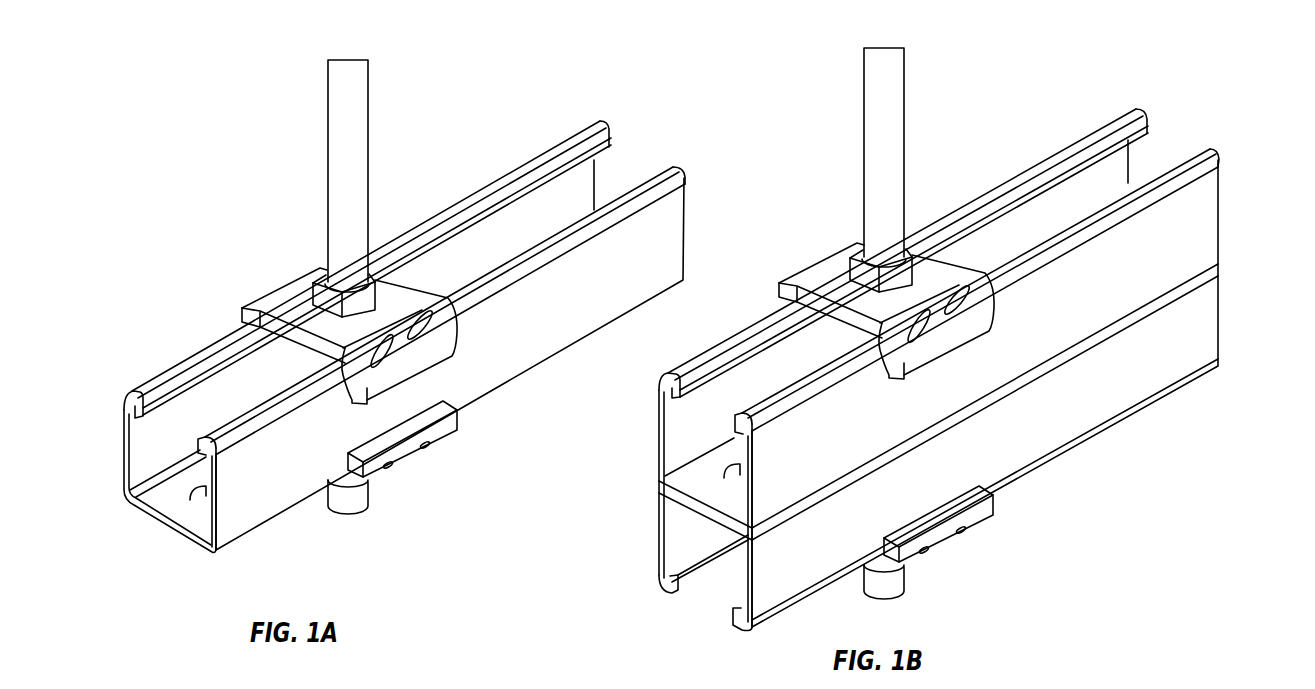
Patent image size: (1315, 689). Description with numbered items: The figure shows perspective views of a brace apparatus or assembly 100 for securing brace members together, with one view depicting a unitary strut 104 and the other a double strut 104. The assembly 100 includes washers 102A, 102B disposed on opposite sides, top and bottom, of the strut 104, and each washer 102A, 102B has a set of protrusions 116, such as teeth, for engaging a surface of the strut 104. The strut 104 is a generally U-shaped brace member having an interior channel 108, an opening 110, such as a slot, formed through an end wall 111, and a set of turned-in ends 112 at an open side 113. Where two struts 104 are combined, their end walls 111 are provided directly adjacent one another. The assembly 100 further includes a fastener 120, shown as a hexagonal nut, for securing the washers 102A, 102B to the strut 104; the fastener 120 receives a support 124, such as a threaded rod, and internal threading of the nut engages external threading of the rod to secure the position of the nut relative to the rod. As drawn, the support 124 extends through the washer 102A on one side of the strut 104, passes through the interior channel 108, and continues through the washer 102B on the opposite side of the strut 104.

In FIG. 1A, the brace apparatus or assembly 100 is at (128, 130).
In FIG. 1A, the washer 102A is at (305, 298).
In FIG. 1B, the washer 102A is at (838, 270).
In FIG. 1A, the washer 102B is at (407, 455).
In FIG. 1B, the washer 102B is at (940, 540).
In FIG. 1A, the strut 104 is at (665, 233).
In FIG. 1B, the strut 104 is at (1207, 221).
In FIG. 1A, the interior channel 108 is at (158, 458).
In FIG. 1B, the interior channel 108 is at (677, 433).
In FIG. 1A, the opening 110 is at (200, 500).
In FIG. 1B, the opening 110 is at (742, 476).
In FIG. 1A, the end wall 111 is at (155, 498).
In FIG. 1B, the end wall 111 is at (720, 517).
In FIG. 1A, the turned-in ends 112 is at (132, 409).
In FIG. 1B, the turned-in ends 112 is at (672, 392).
In FIG. 1A, the open side 113 is at (224, 376).
In FIG. 1B, the open side 113 is at (1101, 158).
In FIG. 1A, the protrusions 116 is at (425, 345).
In FIG. 1B, the protrusions 116 is at (960, 312).
In FIG. 1A, the fastener 120 is at (378, 286).
In FIG. 1B, the fastener 120 is at (913, 248).
In FIG. 1A, the support 124 is at (330, 120).
In FIG. 1B, the support 124 is at (868, 78).